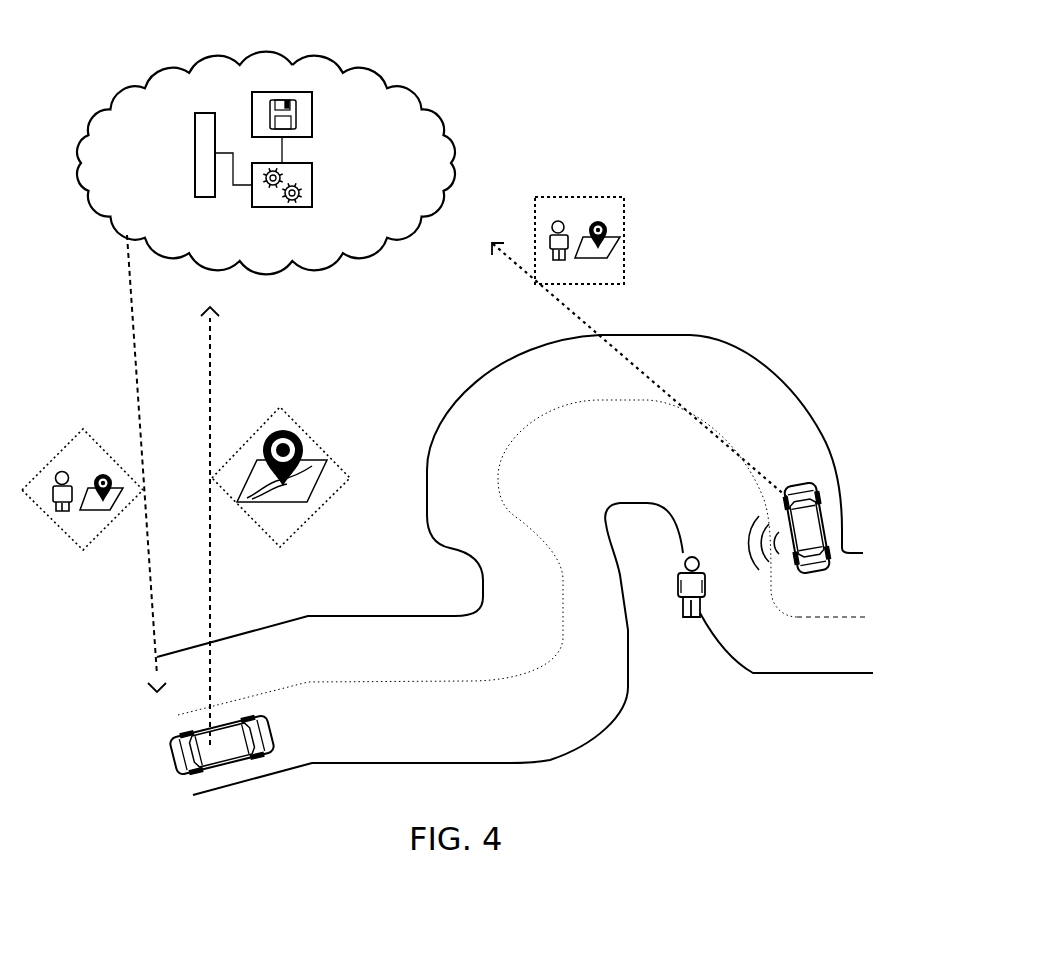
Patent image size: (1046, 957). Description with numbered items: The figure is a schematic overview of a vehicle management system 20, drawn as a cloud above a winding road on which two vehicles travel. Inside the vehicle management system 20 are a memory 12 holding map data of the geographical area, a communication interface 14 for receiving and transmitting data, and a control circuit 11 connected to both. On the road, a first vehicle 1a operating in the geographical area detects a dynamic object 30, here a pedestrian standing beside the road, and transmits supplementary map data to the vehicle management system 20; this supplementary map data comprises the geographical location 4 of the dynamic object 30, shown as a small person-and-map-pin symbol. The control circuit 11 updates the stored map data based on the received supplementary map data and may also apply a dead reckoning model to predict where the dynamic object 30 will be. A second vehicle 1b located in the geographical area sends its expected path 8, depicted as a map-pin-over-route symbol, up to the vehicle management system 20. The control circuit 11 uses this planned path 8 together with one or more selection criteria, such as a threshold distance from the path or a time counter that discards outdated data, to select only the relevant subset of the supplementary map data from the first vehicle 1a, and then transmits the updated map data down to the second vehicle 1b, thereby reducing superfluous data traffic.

The vehicle management system 20 is at (440, 112).
The memory 12 is at (313, 93).
The control circuit 11 is at (313, 163).
The communication interface 14 is at (200, 197).
The expected path 8 is at (317, 437).
The geographical location 4 is at (83, 548).
The dynamic object 30 is at (705, 592).
The first vehicle 1a is at (820, 573).
The second vehicle 1b is at (190, 773).